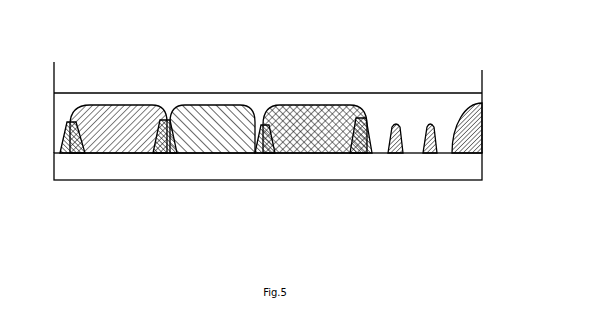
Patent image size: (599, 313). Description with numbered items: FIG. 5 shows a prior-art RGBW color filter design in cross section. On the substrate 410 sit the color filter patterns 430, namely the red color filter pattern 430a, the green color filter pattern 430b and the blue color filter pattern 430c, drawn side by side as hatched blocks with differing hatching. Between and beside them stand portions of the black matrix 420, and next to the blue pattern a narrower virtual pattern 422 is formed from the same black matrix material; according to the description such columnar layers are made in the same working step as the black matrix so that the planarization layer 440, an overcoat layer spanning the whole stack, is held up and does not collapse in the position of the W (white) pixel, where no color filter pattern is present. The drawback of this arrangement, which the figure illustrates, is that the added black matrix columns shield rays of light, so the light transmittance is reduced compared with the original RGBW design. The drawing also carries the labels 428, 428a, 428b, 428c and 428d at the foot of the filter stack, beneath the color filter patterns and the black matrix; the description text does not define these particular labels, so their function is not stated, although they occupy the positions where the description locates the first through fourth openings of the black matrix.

The substrate 410 is at (268, 166).
The planarization layer 440 is at (446, 101).
The color filter patterns 430 is at (218, 95).
The red color filter pattern 430a is at (119, 105).
The green color filter pattern 430b is at (215, 105).
The blue color filter pattern 430c is at (313, 105).
The electrodes 428 is at (243, 176).
The first electrode 428a is at (118, 146).
The second electrode 428b is at (208, 146).
The third electrode 428c is at (316, 146).
The fourth electrode 428d is at (388, 162).
The virtual pattern 422 is at (396, 123).
The black matrix 420 is at (483, 131).